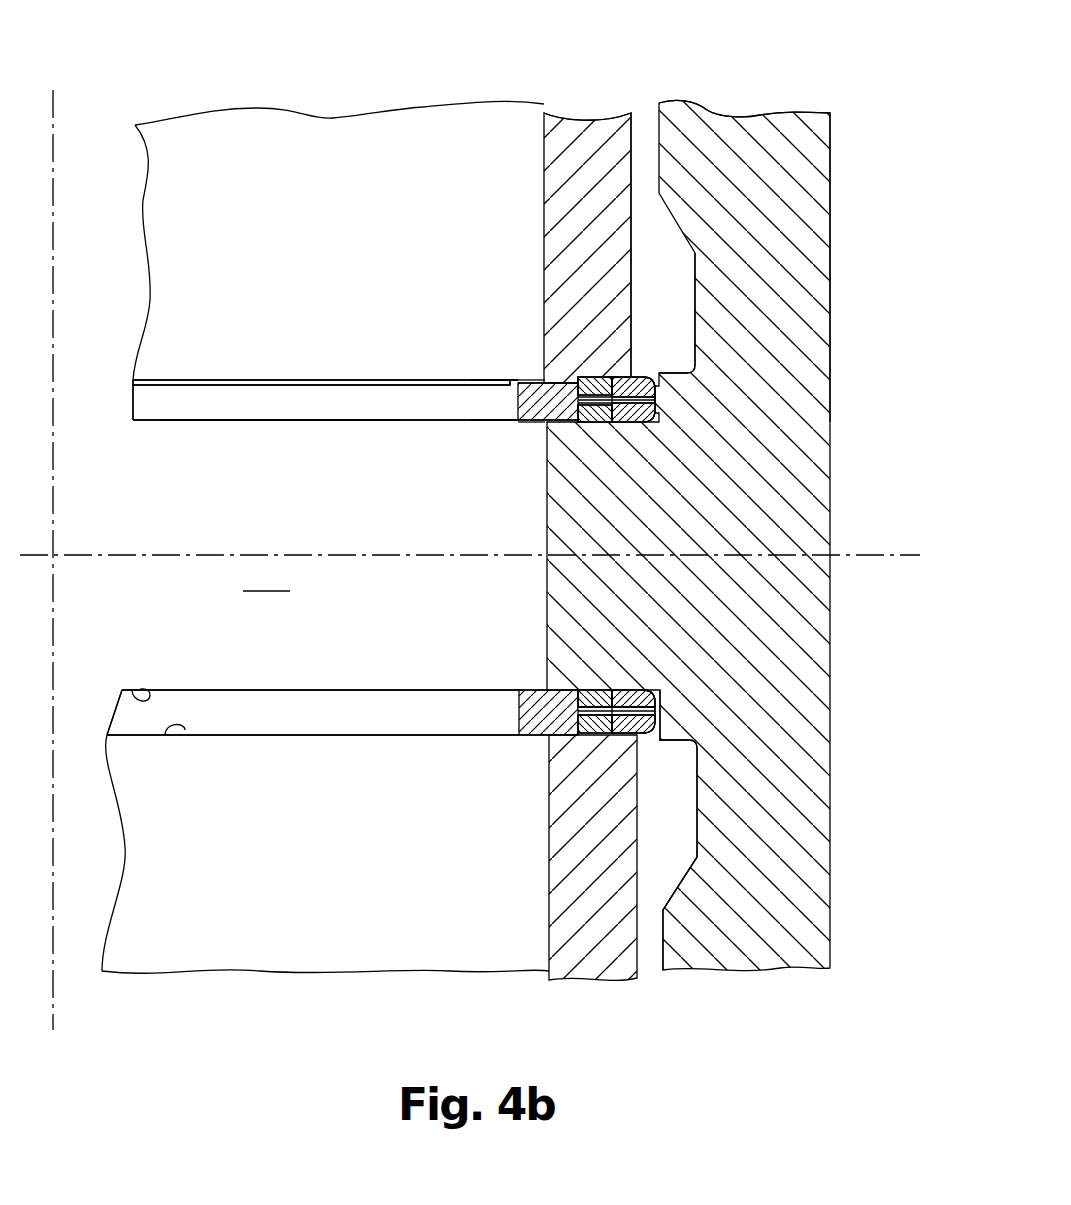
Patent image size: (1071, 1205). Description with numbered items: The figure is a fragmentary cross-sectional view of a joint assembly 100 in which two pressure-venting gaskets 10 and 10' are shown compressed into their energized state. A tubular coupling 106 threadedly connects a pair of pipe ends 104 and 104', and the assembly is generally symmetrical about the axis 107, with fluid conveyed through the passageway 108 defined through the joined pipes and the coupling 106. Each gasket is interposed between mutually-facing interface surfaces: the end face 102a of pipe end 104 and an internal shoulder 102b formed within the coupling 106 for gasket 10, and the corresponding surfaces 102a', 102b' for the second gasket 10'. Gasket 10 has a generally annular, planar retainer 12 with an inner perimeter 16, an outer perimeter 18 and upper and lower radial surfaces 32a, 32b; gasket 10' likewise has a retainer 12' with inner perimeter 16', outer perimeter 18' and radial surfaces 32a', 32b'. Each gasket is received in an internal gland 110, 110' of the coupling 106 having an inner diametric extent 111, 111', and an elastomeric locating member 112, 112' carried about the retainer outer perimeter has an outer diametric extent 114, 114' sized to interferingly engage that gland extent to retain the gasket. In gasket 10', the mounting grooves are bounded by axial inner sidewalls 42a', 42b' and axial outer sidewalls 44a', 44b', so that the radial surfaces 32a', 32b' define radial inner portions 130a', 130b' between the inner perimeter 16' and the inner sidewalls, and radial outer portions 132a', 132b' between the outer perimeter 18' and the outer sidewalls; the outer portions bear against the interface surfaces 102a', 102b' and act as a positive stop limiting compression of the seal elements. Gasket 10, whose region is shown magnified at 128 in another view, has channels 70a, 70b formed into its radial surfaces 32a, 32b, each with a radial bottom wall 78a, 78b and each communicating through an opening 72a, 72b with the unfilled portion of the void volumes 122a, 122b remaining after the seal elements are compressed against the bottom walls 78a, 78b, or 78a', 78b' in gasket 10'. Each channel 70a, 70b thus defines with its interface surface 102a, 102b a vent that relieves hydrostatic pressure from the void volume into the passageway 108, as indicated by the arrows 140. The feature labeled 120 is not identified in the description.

The pressure-venting gasket 10 is at (298, 369).
The second gasket 10' is at (306, 668).
The retainer 12 is at (100, 441).
The retainer 12' is at (98, 767).
The inner perimeter 16 is at (444, 419).
The inner perimeter 16' is at (476, 738).
The outer perimeter 18 is at (572, 295).
The outer perimeter 18' is at (579, 647).
The upper radial surface 32a is at (325, 337).
The lower radial surface 32b is at (325, 460).
The upper radial surface 32a' is at (313, 773).
The lower radial surface 32b' is at (320, 658).
The axial inner sidewall 42a' is at (535, 789).
The axial inner sidewall 42b' is at (537, 678).
The axial outer sidewall 44a' is at (558, 809).
The axial outer sidewall 44b' is at (531, 659).
The channel 70a is at (505, 376).
The channel 70b is at (508, 424).
The opening 72a is at (575, 377).
The opening 72b is at (579, 424).
The radial bottom wall 78a is at (751, 386).
The radial bottom wall 78b is at (750, 440).
The bottom wall 78a' is at (765, 633).
The bottom wall 78b' is at (773, 739).
The joint assembly 100 is at (862, 98).
The interface surface 102a is at (321, 352).
The interface surface 102b is at (267, 463).
The interface surface 102a' is at (191, 771).
The interface surface 102b' is at (178, 665).
The pipe end 104 is at (579, 202).
The pipe end 104' is at (593, 893).
The tubular coupling 106 is at (745, 105).
The axis 107 is at (900, 555).
The passageway 108 is at (325, 768).
The internal gland 110 is at (770, 337).
The internal gland 110' is at (782, 830).
The inner diametric extent 111 is at (768, 294).
The inner diametric extent 111' is at (726, 931).
The elastomeric locating member 112 is at (734, 420).
The elastomeric locating member 112' is at (743, 679).
The outer diametric extent 114 is at (771, 378).
The outer diametric extent 114' is at (781, 664).
The axis 120 is at (53, 975).
The void volume 122a is at (537, 374).
The void volume 122b is at (542, 426).
The magnified view of gasket 128 is at (472, 207).
The radial inner portion 130a' is at (470, 787).
The radial inner portion 130b' is at (457, 672).
The radial outer portion 132a' is at (547, 833).
The radial outer portion 132b' is at (518, 639).
The arrows 140 is at (490, 382).